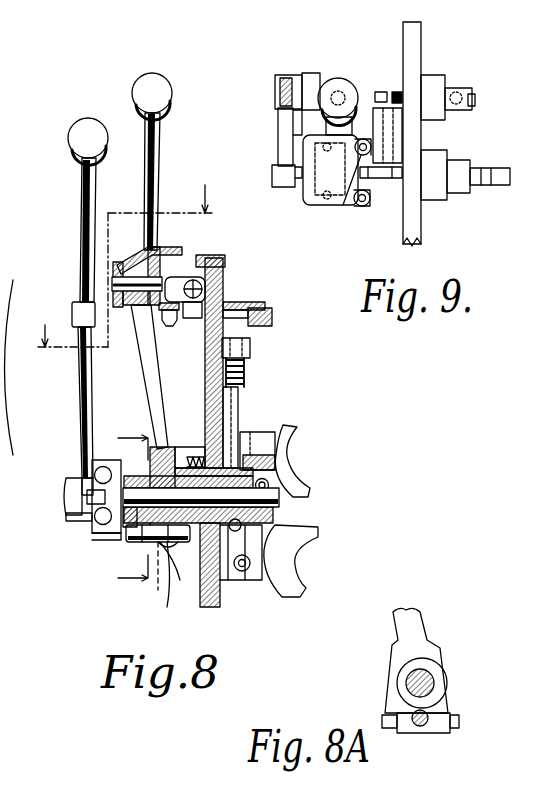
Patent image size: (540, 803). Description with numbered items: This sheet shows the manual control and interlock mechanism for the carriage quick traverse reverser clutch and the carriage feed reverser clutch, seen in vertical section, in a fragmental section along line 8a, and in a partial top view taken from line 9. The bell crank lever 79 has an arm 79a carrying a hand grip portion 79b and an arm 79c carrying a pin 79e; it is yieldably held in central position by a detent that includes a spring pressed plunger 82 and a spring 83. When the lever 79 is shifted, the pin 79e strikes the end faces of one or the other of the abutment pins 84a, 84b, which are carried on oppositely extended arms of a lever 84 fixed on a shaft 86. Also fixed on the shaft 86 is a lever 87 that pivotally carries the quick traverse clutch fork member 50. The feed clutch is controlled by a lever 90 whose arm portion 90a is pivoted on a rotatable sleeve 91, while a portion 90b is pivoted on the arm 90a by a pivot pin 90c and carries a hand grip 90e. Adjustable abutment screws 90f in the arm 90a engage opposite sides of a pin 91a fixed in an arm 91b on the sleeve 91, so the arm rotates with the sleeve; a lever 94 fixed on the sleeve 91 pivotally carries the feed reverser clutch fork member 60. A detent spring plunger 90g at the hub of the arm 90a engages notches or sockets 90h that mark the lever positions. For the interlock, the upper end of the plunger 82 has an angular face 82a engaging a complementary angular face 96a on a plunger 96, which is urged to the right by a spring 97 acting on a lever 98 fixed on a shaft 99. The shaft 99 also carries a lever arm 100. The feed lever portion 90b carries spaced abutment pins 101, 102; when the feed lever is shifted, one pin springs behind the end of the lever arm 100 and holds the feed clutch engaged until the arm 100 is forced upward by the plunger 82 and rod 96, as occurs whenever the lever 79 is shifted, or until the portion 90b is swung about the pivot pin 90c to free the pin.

In FIG. 8, the line 9— 9 is at (126, 258).
In FIG. 8, the line 8A—8A 8a is at (130, 508).
In FIG. 8, the quick traverse clutch fork member 50 is at (296, 560).
In FIG. 8, the feed reverser clutch fork member 60 is at (300, 450).
In FIG. 9, the feed reverser clutch fork member 60 is at (482, 170).
In FIG. 8, the bell crank lever 79 is at (82, 413).
In FIG. 8, the arm 79a is at (87, 437).
In FIG. 9, the arm 79a is at (278, 95).
In FIG. 8, the hand grip portion 79b is at (80, 128).
In FIG. 8, the arm 79c is at (70, 498).
In FIG. 9, the arm 79c is at (290, 132).
In FIG. 8, the pin 79e is at (88, 517).
In FIG. 9, the pin 79e is at (290, 160).
In FIG. 8, the spring pressed plunger 82 is at (235, 410).
In FIG. 9, the spring pressed plunger 82 is at (449, 82).
In FIG. 8, the angular face 82a is at (248, 343).
In FIG. 8, the spring 83 is at (246, 373).
In FIG. 8, the lever 84 is at (100, 466).
In FIG. 8, the abutment pin 84a is at (95, 476).
In FIG. 8, the abutment pin 84b is at (95, 538).
In FIG. 8, the shaft 86 is at (135, 541).
In FIG. 8A, the shaft 86 is at (412, 679).
In FIG. 8, the lever 87 is at (262, 538).
In FIG. 8, the lever 90 is at (152, 195).
In FIG. 9, the lever 90 is at (330, 122).
In FIG. 8, the arm portion 90a is at (160, 380).
In FIG. 8A, the arm portion 90a is at (415, 618).
In FIG. 8, the portion 90b is at (162, 252).
In FIG. 8, the pivot pin 90c is at (138, 272).
In FIG. 9, the pivot pin 90c is at (302, 192).
In FIG. 8, the hand grip 90e is at (170, 94).
In FIG. 9, the hand grip 90e is at (336, 88).
In FIG. 8, the adjustable abutment screws 90f is at (158, 584).
In FIG. 8A, the adjustable abutment screws 90f is at (424, 728).
In FIG. 8, the spring plunger 90g is at (186, 455).
In FIG. 8, the notches or sockets 90h is at (178, 447).
In FIG. 8, the rotatable sleeve 91 is at (163, 440).
In FIG. 8A, the rotatable sleeve 91 is at (408, 690).
In FIG. 8, the pin 91a is at (167, 602).
In FIG. 8A, the pin 91a is at (435, 718).
In FIG. 8, the arm 91b is at (135, 555).
In FIG. 8, the lever 94 is at (256, 445).
In FIG. 8, the plunger 96 is at (272, 316).
In FIG. 9, the plunger 96 is at (475, 100).
In FIG. 8, the angular face 96a is at (242, 304).
In FIG. 8, the spring 97 is at (232, 265).
In FIG. 9, the spring 97 is at (396, 92).
In FIG. 8, the lever 98 is at (180, 315).
In FIG. 9, the lever 98 is at (378, 92).
In FIG. 8, the shaft 99 is at (205, 290).
In FIG. 9, the shaft 99 is at (400, 128).
In FIG. 8, the lever arm 100 is at (225, 262).
In FIG. 9, the lever arm 100 is at (320, 150).
In FIG. 9, the abutment pin 101 is at (357, 206).
In FIG. 8, the abutment pin 102 is at (170, 318).
In FIG. 9, the abutment pin 102 is at (345, 198).